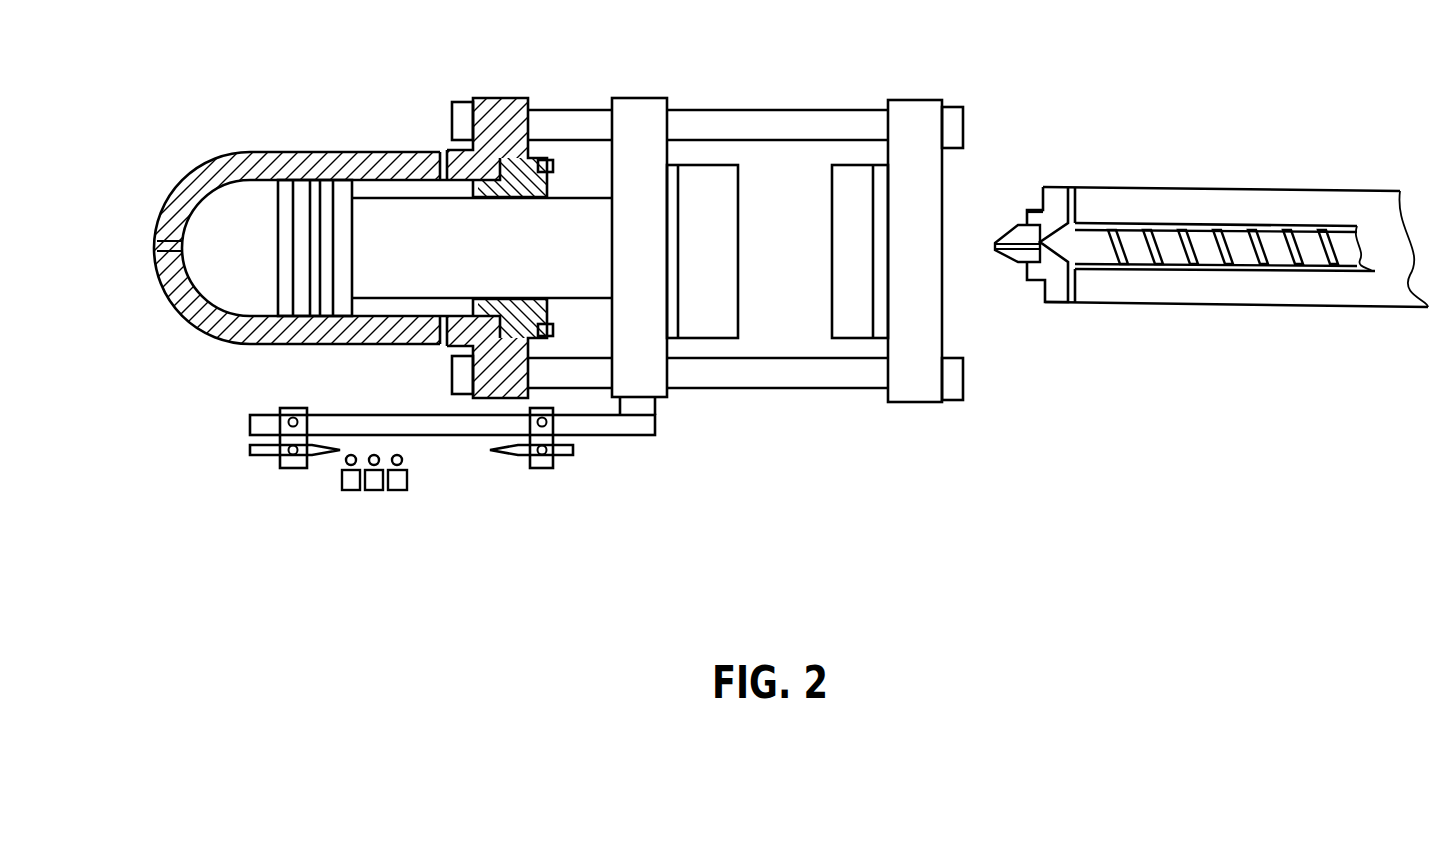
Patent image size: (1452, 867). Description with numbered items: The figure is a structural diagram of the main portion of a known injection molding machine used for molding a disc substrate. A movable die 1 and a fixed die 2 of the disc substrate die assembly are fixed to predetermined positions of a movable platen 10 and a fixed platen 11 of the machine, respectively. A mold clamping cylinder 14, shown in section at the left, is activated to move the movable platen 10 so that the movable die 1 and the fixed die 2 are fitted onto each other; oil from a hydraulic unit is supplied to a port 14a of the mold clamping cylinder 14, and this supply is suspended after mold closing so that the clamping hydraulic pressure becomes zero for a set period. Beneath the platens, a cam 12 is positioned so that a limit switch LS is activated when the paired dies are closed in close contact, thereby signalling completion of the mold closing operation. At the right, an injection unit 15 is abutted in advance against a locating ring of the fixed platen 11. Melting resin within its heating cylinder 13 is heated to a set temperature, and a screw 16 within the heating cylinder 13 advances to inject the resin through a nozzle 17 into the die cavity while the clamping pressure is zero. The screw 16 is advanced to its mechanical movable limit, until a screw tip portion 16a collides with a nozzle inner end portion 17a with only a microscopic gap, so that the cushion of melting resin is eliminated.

The movable die 1 is at (717, 325).
The fixed die 2 is at (860, 327).
The movable platen 10 is at (640, 124).
The fixed platen 11 is at (917, 124).
The cam 12 is at (315, 457).
The limit switch LS is at (397, 490).
The heating cylinder 13 is at (1137, 288).
The mold clamping cylinder 14 is at (508, 116).
The port 14a is at (157, 246).
The injection unit 15 is at (1314, 168).
The screw 16 is at (1357, 255).
The screw tip portion 16a is at (1072, 244).
The nozzle 17 is at (1003, 262).
The nozzle inner end portion 17a is at (1035, 210).